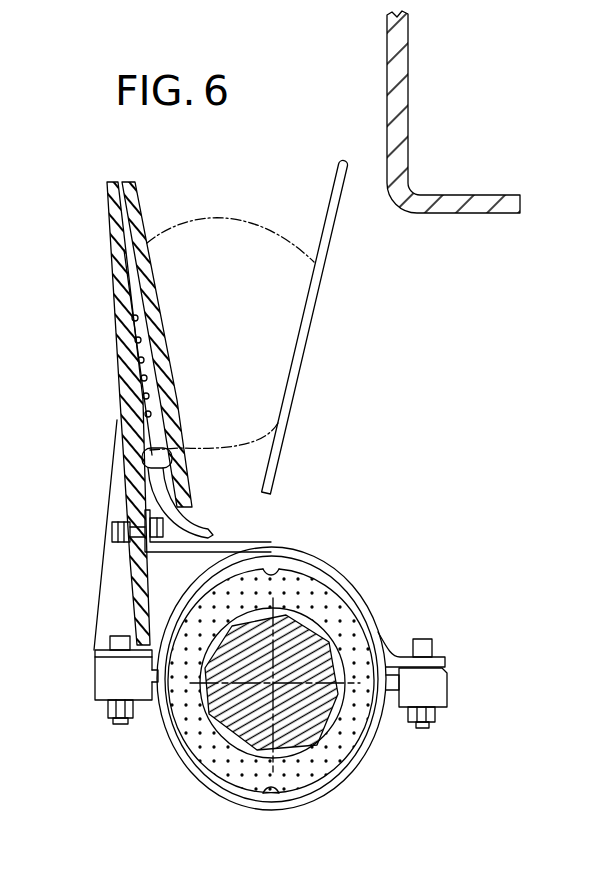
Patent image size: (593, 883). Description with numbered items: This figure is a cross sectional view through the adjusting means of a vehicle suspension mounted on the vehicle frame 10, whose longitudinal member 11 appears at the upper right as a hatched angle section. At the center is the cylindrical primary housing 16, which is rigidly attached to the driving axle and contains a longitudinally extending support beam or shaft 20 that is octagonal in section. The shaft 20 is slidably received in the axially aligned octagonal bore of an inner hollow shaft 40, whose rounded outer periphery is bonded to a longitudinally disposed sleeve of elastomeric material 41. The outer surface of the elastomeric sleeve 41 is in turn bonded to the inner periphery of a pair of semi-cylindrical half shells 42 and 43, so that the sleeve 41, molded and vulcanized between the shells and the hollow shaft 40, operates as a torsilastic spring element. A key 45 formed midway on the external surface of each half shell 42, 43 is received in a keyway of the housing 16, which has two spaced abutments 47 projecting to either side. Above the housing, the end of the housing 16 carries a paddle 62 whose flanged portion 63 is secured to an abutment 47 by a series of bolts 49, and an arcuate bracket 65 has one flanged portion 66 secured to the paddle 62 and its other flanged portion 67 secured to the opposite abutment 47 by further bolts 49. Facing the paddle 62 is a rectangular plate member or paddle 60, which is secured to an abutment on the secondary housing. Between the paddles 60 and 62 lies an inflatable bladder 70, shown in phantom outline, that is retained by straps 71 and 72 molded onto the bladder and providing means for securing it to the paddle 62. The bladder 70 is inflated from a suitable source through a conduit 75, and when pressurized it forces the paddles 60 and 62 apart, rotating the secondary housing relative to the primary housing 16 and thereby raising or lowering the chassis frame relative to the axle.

The vehicle frame 10 is at (472, 150).
The longitudinal member 11 is at (495, 208).
The primary housing 16 is at (378, 617).
The support beam or shaft 20 is at (303, 637).
The inner hollow shaft 40 is at (323, 733).
The elastomeric sleeve 41 is at (223, 763).
The semi-cylindrical half shell 42 is at (177, 742).
The semi-cylindrical half shell 43 is at (375, 737).
The key 45 is at (147, 703).
The abutment 47 is at (96, 690).
The bolt 49 is at (113, 530).
The paddle 60 is at (133, 209).
The paddle 62 is at (113, 220).
The flanged portion 63 is at (95, 652).
The arcuate bracket 65 is at (318, 553).
The flanged portion 66 is at (146, 512).
The flanged portion 67 is at (445, 661).
The inflatable bladder 70 is at (243, 220).
The strap 71 is at (132, 323).
The strap 72 is at (133, 375).
The conduit 75 is at (198, 528).